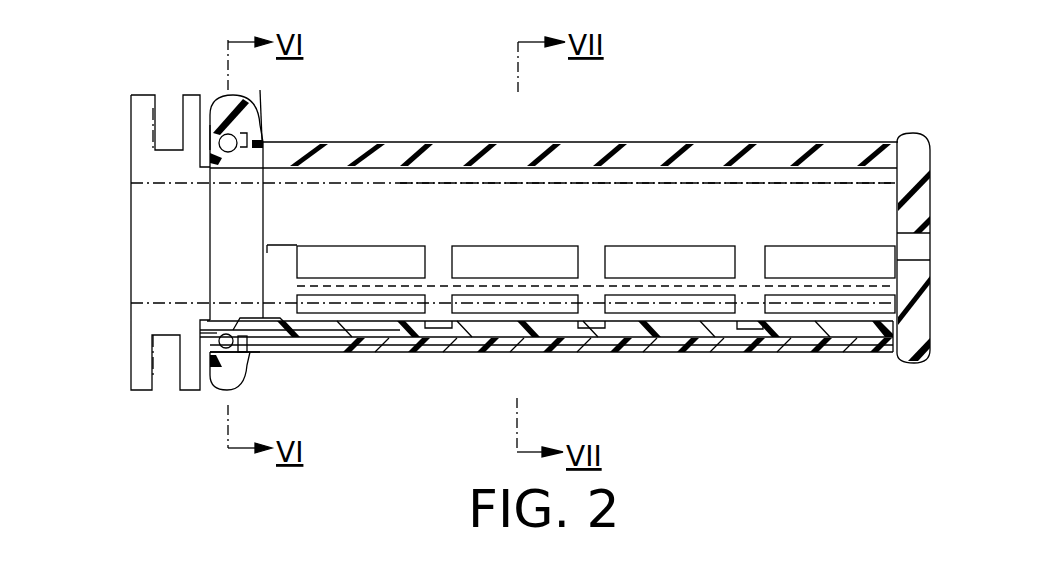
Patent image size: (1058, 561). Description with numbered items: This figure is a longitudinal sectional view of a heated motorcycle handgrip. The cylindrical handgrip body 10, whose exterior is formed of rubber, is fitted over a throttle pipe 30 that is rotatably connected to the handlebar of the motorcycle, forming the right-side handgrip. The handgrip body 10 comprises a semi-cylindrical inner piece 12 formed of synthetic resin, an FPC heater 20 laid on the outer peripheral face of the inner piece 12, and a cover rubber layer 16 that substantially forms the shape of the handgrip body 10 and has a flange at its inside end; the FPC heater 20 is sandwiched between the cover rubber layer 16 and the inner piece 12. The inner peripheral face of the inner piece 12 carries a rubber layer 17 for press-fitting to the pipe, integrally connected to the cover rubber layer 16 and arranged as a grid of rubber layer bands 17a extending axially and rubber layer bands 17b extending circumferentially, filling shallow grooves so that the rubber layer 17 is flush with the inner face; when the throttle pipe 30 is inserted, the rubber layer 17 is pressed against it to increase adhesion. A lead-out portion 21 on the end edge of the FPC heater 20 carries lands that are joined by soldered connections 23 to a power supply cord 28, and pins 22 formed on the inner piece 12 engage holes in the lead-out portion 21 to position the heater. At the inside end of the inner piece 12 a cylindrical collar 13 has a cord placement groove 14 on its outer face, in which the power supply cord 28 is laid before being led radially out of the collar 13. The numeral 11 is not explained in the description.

The handgrip body 10 is at (780, 133).
The end cap 11 is at (232, 97).
The semi-cylindrical inner piece 12 is at (672, 328).
The cylindrical collar 13 is at (208, 140).
The cord placement groove 14 is at (220, 135).
The cover rubber layer 16 is at (787, 352).
The rubber layer 17 is at (581, 214).
The rubber layer bands 17a is at (358, 287).
The rubber layer bands 17b is at (477, 78).
The FPC heater 20 is at (437, 352).
The lead-out portion 21 is at (217, 337).
The pins 22 is at (247, 352).
The soldered connections 23 is at (217, 385).
The power supply cord 28 is at (261, 97).
The throttle pipe 30 is at (710, 170).